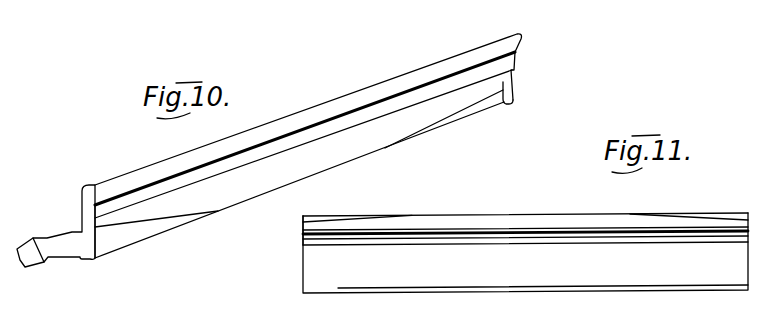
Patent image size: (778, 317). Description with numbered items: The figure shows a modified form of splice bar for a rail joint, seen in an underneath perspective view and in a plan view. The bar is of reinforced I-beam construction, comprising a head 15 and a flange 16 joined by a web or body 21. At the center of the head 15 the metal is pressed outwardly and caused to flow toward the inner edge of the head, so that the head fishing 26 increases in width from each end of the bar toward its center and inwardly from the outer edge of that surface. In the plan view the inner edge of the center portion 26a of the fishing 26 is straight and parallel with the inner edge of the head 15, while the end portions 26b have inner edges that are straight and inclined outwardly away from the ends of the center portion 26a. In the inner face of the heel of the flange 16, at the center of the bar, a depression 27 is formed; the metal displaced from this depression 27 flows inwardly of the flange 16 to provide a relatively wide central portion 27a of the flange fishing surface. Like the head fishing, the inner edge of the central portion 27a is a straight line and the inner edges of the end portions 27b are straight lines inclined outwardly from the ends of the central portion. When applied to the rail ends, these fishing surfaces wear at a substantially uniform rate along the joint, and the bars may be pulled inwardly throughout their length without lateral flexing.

In FIG. 10, the head 15 is at (31, 250).
In FIG. 11, the head 15 is at (303, 222).
In FIG. 10, the flange 16 is at (122, 186).
In FIG. 11, the flange 16 is at (308, 271).
In FIG. 10, the web or body 21 is at (58, 247).
In FIG. 11, the fishing 26 is at (483, 217).
In FIG. 11, the center portion 26a is at (517, 220).
In FIG. 11, the end portions 26b is at (321, 231).
In FIG. 10, the depression 27 is at (318, 139).
In FIG. 10, the central portion 27a is at (299, 176).
In FIG. 10, the end portions 27b is at (504, 103).